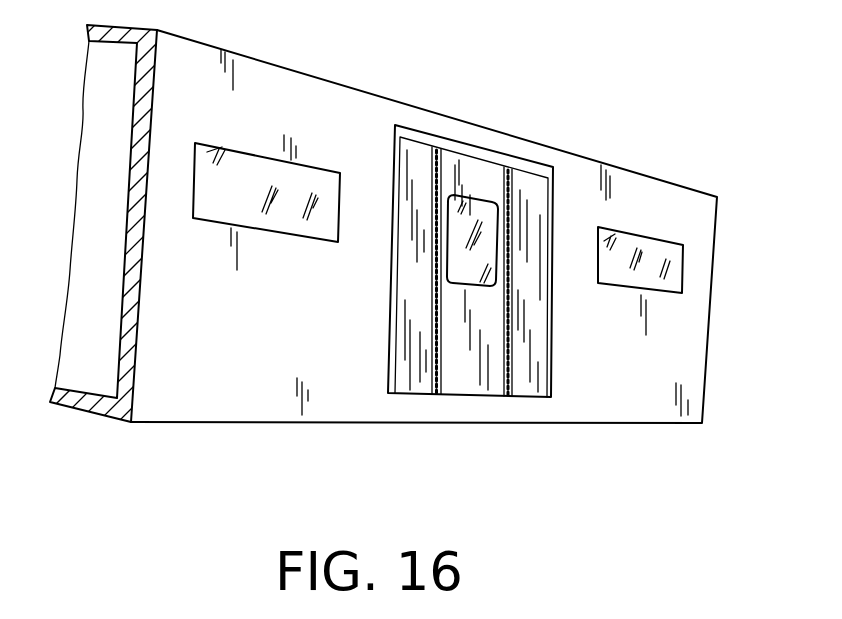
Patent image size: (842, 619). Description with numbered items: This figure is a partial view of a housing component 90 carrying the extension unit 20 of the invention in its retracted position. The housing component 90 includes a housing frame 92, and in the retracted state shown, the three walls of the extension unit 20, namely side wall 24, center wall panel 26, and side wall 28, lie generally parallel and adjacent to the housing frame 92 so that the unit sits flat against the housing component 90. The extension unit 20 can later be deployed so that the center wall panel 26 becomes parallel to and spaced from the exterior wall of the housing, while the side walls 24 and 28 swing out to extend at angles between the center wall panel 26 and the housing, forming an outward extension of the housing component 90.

The housing component 90 is at (137, 437).
The housing frame 92 is at (625, 190).
The extension unit 20 is at (484, 279).
The side wall 24 is at (422, 158).
The center wall panel 26 is at (477, 180).
The side wall 28 is at (527, 192).